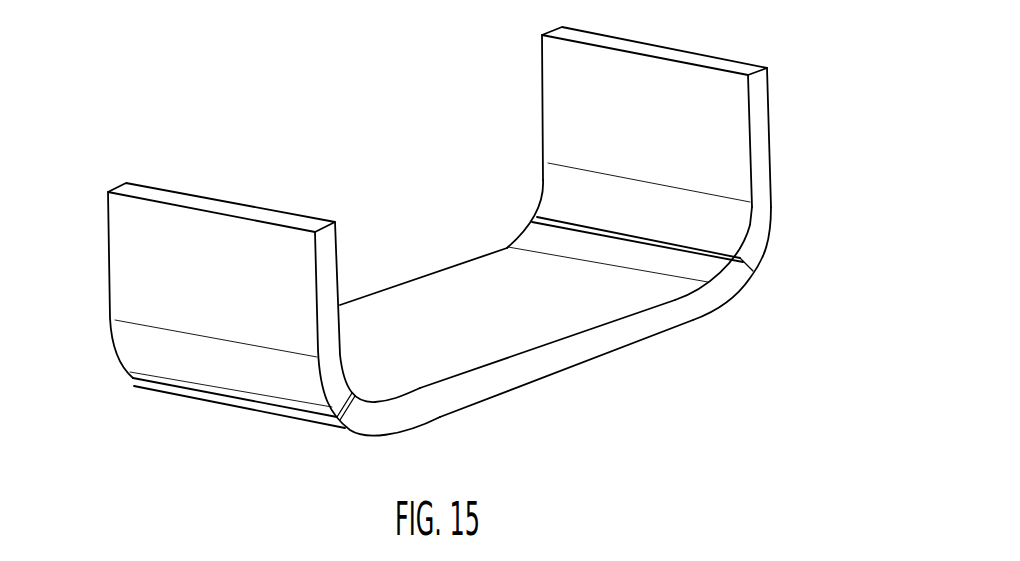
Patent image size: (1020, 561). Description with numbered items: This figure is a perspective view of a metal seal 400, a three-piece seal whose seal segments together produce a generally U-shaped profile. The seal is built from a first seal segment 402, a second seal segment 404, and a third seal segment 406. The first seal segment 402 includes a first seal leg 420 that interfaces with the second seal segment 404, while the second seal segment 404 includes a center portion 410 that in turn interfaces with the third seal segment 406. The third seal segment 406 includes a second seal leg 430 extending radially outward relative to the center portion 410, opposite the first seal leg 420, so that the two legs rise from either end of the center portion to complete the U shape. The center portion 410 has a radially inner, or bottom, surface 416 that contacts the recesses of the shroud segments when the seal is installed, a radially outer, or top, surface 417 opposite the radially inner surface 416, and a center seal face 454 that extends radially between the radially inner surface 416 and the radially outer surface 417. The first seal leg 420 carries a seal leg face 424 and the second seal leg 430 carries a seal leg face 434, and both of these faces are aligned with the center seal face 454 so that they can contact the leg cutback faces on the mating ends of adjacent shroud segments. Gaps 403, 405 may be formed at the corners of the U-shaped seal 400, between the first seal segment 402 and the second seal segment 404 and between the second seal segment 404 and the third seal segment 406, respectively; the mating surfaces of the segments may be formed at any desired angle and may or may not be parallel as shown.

The metal seal 400 is at (436, 238).
The first seal segment 402 is at (241, 276).
The gap 403 is at (264, 421).
The second seal segment 404 is at (585, 312).
The gap 405 is at (768, 278).
The third seal segment 406 is at (635, 141).
The center portion 410 is at (507, 283).
The radially inner surface 416 is at (442, 412).
The radially outer surface 417 is at (463, 283).
The first seal leg 420 is at (99, 298).
The seal leg face 424 is at (330, 258).
The second seal leg 430 is at (527, 173).
The seal leg face 434 is at (764, 108).
The center seal face 454 is at (572, 352).